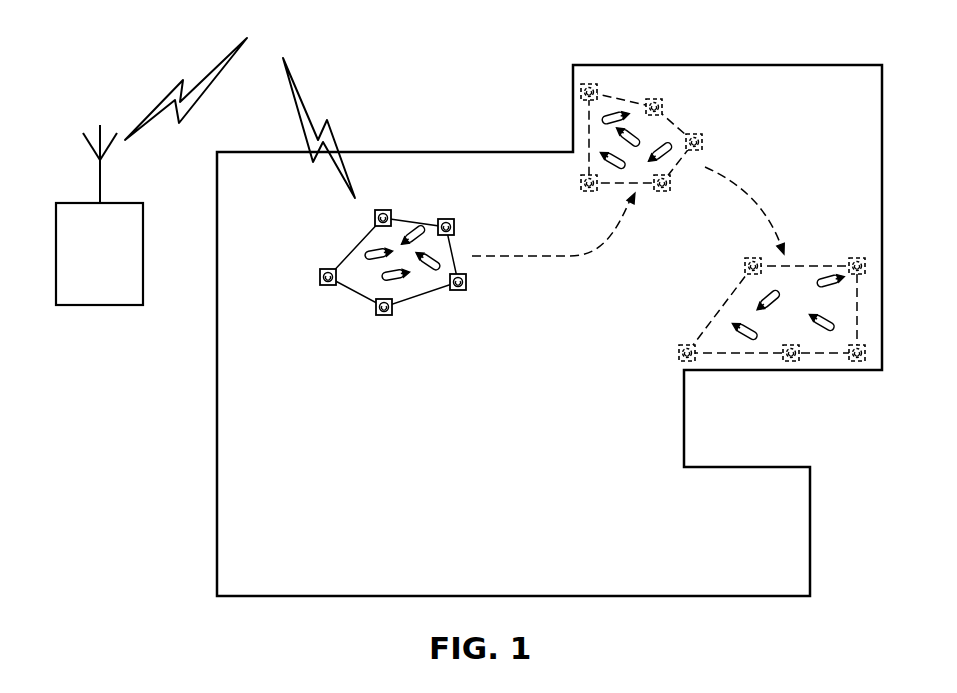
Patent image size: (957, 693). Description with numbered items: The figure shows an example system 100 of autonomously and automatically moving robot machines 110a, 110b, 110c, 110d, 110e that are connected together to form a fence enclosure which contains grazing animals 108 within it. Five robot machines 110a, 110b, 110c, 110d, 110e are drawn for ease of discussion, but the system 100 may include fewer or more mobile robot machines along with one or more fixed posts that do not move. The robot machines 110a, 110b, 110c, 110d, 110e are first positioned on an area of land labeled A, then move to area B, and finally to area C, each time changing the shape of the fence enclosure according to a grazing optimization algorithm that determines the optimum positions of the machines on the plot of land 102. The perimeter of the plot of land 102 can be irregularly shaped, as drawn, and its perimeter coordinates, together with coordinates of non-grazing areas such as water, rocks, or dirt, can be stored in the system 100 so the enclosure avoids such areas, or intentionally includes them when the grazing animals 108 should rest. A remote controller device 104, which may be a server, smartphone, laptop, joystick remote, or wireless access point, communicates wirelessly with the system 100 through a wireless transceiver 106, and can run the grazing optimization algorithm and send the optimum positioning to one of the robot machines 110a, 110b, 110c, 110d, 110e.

The system 100 is at (431, 153).
The plot of land 102 is at (703, 65).
The remote controller device 104 is at (124, 268).
The wireless transceiver 106 is at (100, 173).
The grazing animals 108 is at (412, 226).
The robot machine 110a is at (328, 285).
The robot machine 110b is at (375, 219).
The robot machine 110c is at (455, 228).
The robot machine 110d is at (458, 290).
The robot machine 110e is at (384, 315).